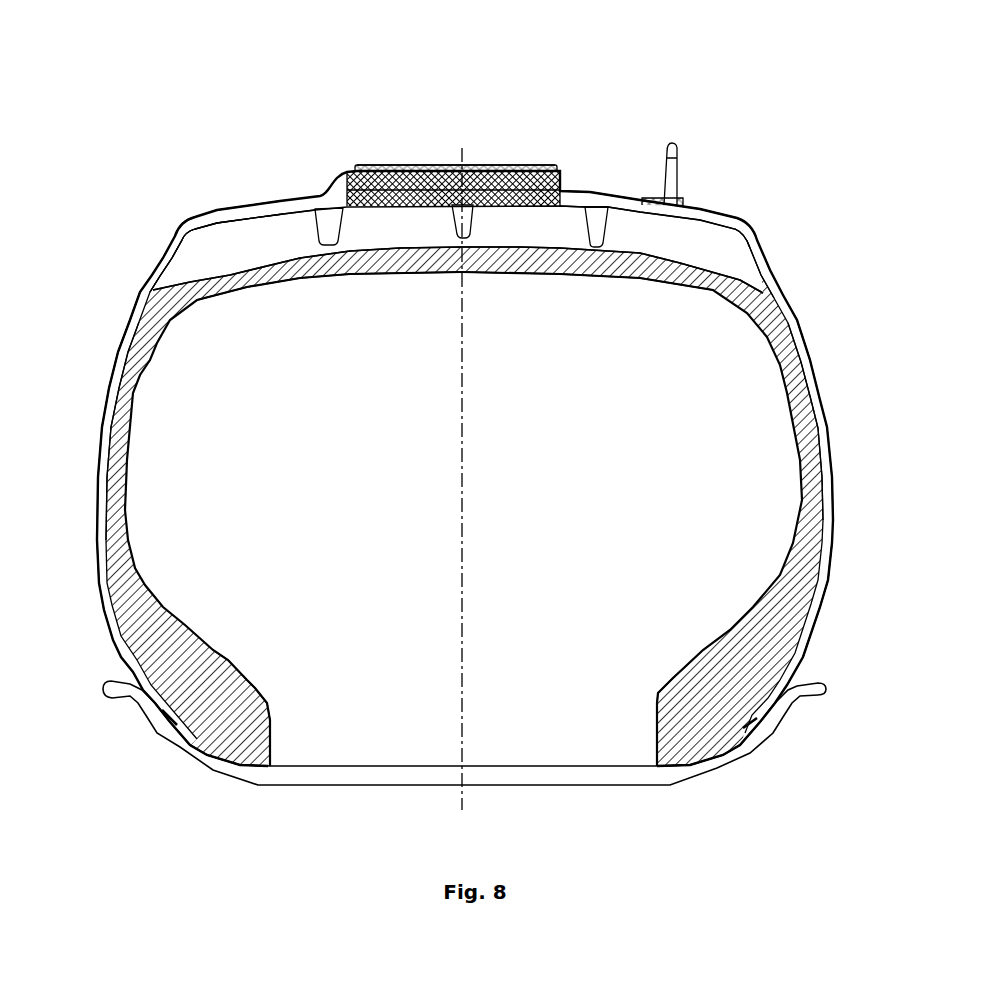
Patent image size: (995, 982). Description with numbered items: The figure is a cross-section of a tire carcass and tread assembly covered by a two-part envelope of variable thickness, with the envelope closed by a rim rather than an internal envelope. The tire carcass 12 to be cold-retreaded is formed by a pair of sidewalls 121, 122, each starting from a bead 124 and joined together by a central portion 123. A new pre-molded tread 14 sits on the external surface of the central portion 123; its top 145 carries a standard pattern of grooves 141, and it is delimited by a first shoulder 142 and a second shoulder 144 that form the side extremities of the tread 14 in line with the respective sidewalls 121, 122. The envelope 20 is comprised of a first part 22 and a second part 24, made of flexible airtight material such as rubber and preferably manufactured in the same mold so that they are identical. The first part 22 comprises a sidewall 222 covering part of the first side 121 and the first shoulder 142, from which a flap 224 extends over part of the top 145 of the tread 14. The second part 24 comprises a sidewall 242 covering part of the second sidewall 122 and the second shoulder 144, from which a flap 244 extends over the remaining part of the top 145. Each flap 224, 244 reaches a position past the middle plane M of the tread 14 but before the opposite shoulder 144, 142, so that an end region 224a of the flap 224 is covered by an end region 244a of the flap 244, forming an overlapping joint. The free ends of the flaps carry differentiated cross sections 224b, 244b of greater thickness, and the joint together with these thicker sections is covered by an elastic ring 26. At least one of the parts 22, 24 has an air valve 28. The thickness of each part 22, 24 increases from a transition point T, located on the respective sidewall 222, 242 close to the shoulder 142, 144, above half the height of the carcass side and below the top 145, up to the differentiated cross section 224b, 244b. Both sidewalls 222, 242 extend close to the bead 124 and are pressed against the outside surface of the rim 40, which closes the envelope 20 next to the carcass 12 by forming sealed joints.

The tire carcass 12 is at (155, 625).
The pre-molded tread 14 is at (252, 237).
The envelope 20 is at (92, 455).
The first part of the envelope 22 is at (832, 556).
The second part of the envelope 24 is at (90, 550).
The elastic ring 26 is at (385, 165).
The air valve 28 is at (678, 145).
The rim 40 is at (342, 775).
The first sidewall of the carcass 121 is at (808, 472).
The second sidewall of the carcass 122 is at (117, 475).
The central portion of the carcass 123 is at (430, 255).
The bead 124 is at (683, 742).
The grooves 141 is at (597, 243).
The first shoulder of the tread 142 is at (760, 256).
The second shoulder of the tread 144 is at (167, 258).
The top of the tread 145 is at (213, 224).
The sidewall of the first part 222 is at (818, 403).
The flap of the first part 224 is at (626, 206).
The end region of the flap of the first part 224a is at (497, 196).
The differentiated cross section of the first flap 224b is at (367, 193).
The sidewall of the second part 242 is at (108, 397).
The flap of the second part 244 is at (281, 205).
The end region of the flap of the second part 244a is at (486, 176).
The differentiated cross section of the second flap 244b is at (539, 172).
The transition point T is at (795, 313).
The middle plane M is at (462, 494).